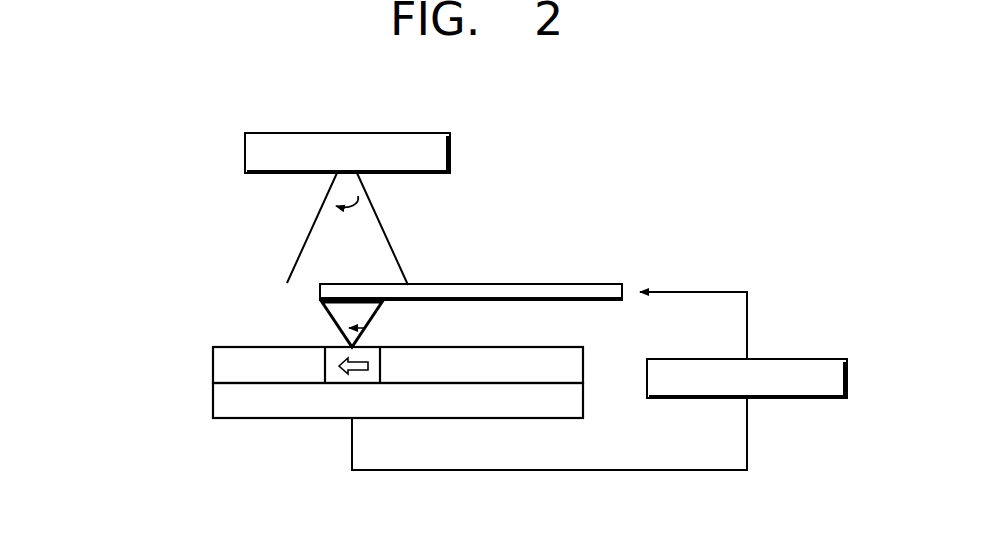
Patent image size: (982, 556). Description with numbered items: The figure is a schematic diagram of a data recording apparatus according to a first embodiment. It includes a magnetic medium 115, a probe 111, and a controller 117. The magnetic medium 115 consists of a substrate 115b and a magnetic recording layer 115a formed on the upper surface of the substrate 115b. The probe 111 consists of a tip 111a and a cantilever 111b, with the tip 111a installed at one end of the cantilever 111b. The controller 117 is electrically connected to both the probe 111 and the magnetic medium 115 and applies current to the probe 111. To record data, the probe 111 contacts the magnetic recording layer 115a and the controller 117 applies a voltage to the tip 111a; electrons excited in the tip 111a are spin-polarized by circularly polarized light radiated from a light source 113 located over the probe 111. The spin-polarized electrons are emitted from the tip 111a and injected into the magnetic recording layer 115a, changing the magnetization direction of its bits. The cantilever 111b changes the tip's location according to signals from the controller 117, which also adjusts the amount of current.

The probe 111 is at (280, 296).
The tip 111a is at (340, 321).
The cantilever 111b is at (427, 292).
The light source 113 is at (450, 153).
The magnetic medium 115 is at (315, 382).
The magnetic recording layer 115a is at (213, 365).
The substrate 115b is at (213, 400).
The controller 117 is at (805, 358).